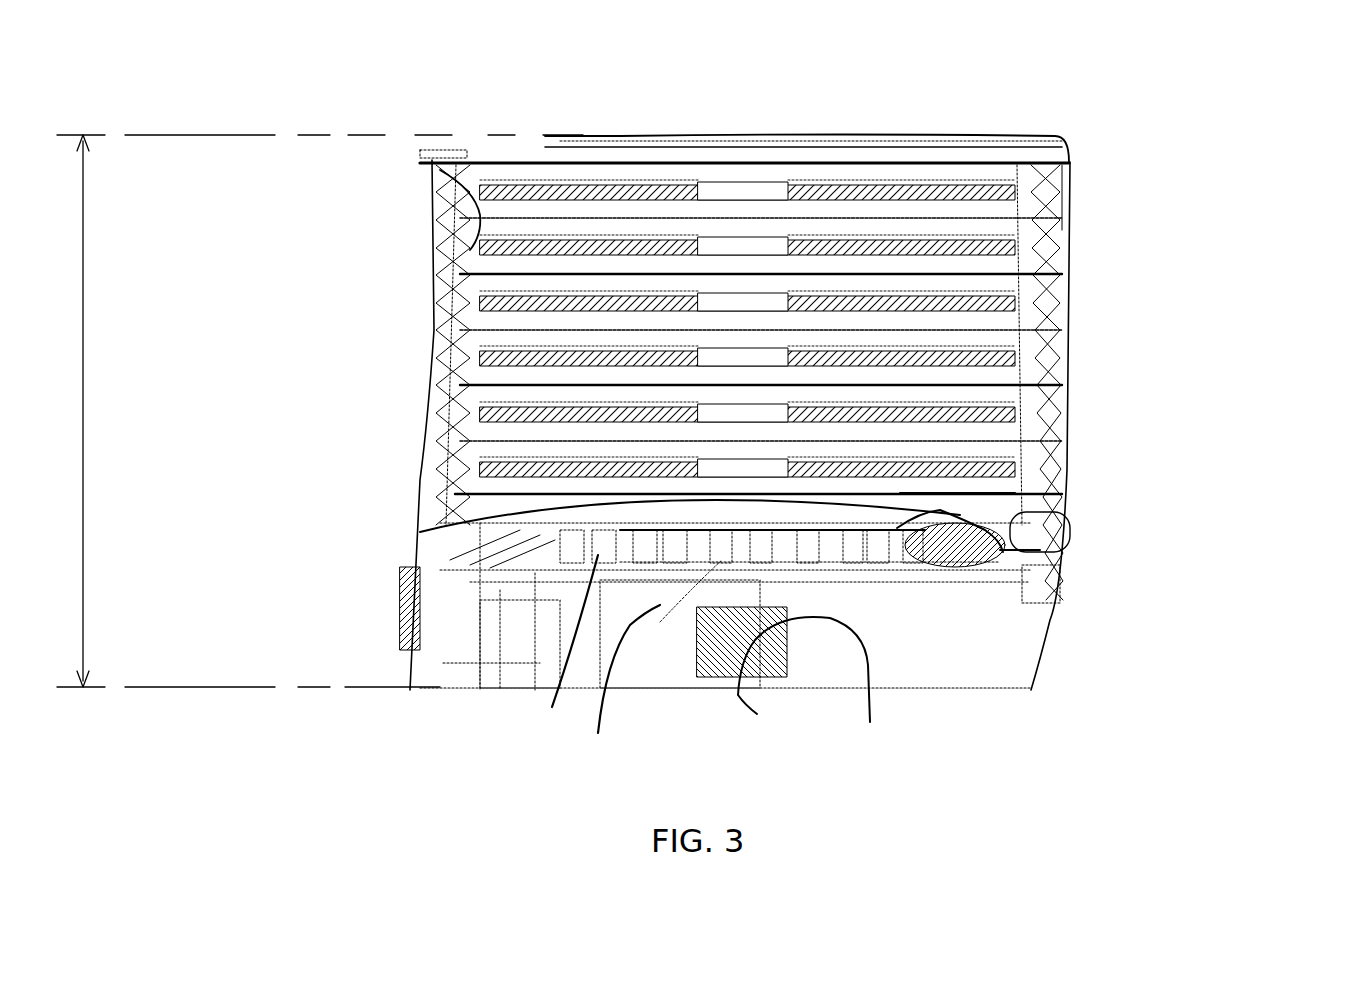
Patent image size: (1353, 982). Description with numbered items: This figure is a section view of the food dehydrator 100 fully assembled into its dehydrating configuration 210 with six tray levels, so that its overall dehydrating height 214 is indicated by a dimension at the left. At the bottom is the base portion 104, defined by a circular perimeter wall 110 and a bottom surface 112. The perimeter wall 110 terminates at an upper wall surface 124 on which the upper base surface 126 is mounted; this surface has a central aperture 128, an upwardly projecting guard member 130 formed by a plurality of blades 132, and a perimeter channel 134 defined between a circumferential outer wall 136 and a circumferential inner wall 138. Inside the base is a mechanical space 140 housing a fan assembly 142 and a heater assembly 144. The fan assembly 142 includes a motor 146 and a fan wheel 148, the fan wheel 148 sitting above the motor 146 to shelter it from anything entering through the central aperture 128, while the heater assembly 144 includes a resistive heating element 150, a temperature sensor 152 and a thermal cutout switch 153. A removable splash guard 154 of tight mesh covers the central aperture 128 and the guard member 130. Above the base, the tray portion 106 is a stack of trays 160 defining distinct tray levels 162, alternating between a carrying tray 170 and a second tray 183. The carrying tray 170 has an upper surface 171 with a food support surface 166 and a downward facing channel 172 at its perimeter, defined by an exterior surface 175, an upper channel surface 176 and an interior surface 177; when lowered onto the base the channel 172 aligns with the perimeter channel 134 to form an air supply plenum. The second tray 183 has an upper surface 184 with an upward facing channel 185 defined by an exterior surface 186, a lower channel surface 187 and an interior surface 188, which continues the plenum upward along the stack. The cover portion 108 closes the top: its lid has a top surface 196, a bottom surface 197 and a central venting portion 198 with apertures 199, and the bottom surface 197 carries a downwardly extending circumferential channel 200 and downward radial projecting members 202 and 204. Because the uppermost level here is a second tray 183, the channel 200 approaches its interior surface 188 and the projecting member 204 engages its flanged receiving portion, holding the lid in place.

The food dehydrator 100 is at (1262, 150).
The base portion 104 is at (1050, 641).
The tray portion 106 is at (1072, 364).
The cover portion 108 is at (960, 146).
The circular perimeter wall 110 is at (1046, 672).
The bottom surface 112 is at (900, 690).
The upper wall surface 124 is at (1055, 517).
The upper base surface 126 is at (1040, 555).
The central aperture 128 is at (770, 540).
The projecting guard member 130 is at (820, 520).
The blades 132 is at (955, 520).
The perimeter channel 134 is at (1040, 518).
The circumferential outer wall 136 is at (1057, 497).
The circumferential inner wall 138 is at (1040, 537).
The mechanical space 140 is at (650, 669).
The fan assembly 142 is at (780, 550).
The heater assembly 144 is at (555, 145).
The motor 146 is at (735, 667).
The fan wheel 148 is at (850, 600).
The resistive heating element 150 is at (600, 553).
The temperature sensor 152 is at (600, 553).
The thermal cutout switch 153 is at (893, 530).
The removable splash guard 154 is at (760, 520).
The trays 160 is at (1060, 241).
The tray levels 162 is at (985, 186).
The food support surface 166 is at (1060, 190).
The carrying tray 170 is at (436, 245).
The upper surface 171 is at (440, 170).
The downward facing channel 172 is at (436, 247).
The exterior surface 175 is at (430, 228).
The upper channel surface 176 is at (462, 236).
The interior surface 177 is at (470, 240).
The second tray 183 is at (432, 406).
The upper surface 184 is at (522, 410).
The upward facing channel 185 is at (436, 410).
The exterior surface 186 is at (436, 418).
The lower channel surface 187 is at (440, 432).
The interior surface 188 is at (485, 412).
The top surface 196 is at (493, 137).
The bottom surface 197 is at (888, 146).
The central venting portion 198 is at (698, 138).
The apertures 199 is at (758, 138).
The downwardly extending circumferential channel 200 is at (463, 158).
The downward radial projecting member 202 is at (430, 157).
The downward radial projecting member 204 is at (417, 158).
The dehydrating configuration 210 is at (858, 136).
The dehydrating height 214 is at (320, 411).